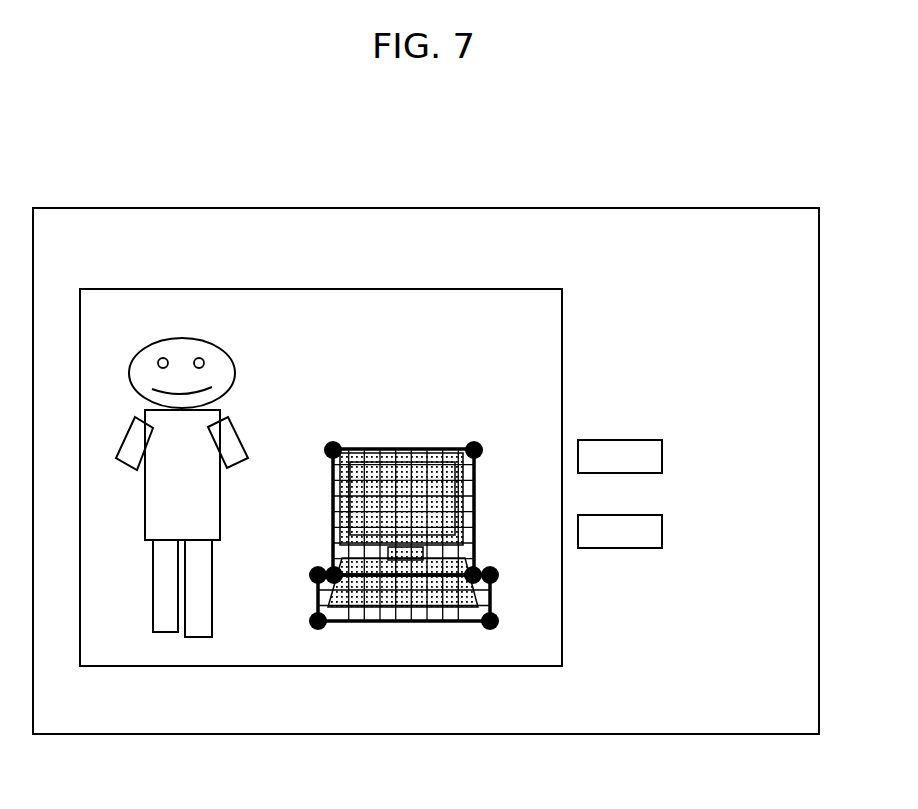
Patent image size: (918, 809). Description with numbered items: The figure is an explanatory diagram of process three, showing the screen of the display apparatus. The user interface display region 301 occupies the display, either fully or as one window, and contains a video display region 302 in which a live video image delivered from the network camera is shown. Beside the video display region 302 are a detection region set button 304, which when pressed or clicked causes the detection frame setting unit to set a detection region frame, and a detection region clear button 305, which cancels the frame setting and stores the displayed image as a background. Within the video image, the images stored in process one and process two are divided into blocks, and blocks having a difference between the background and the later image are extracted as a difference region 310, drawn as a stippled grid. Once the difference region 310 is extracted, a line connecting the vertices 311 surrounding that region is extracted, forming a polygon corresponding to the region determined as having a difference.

The user interface display region 301 is at (693, 208).
The video display region 302 is at (563, 322).
The detection region set button 304 is at (662, 452).
The detection region clear button 305 is at (662, 527).
The difference region 310 is at (382, 448).
The vertices 311 is at (473, 443).